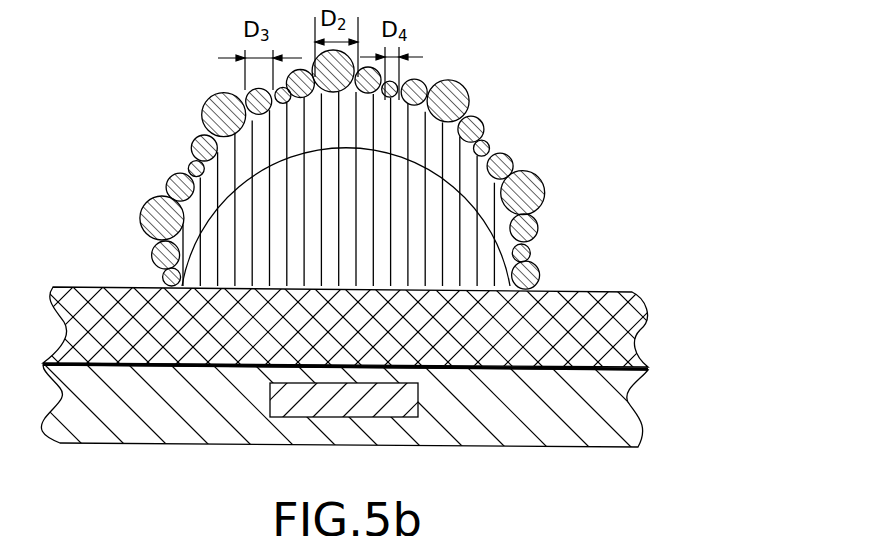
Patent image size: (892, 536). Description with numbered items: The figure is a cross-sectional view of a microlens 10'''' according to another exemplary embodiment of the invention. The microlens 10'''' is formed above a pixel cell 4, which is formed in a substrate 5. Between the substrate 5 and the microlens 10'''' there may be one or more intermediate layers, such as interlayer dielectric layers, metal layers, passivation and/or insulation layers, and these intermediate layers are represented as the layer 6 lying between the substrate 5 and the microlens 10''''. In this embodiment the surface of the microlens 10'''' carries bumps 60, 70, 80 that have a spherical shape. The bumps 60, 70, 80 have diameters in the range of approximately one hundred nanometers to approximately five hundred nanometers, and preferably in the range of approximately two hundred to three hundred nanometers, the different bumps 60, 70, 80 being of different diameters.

The bump 60 is at (450, 100).
The bump 70 is at (480, 123).
The bump 80 is at (485, 143).
The microlens 10'''' is at (432, 189).
The layer 6 is at (618, 350).
The substrate 5 is at (610, 413).
The pixel cell 4 is at (375, 410).